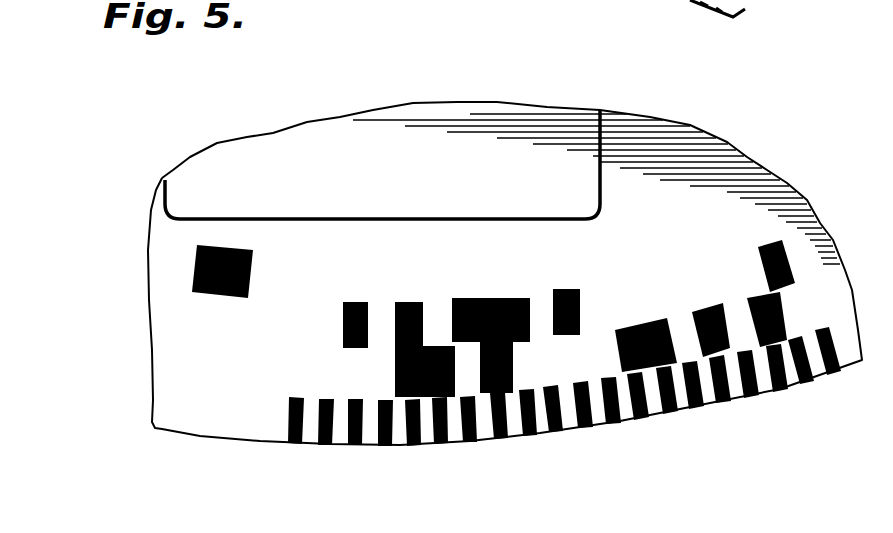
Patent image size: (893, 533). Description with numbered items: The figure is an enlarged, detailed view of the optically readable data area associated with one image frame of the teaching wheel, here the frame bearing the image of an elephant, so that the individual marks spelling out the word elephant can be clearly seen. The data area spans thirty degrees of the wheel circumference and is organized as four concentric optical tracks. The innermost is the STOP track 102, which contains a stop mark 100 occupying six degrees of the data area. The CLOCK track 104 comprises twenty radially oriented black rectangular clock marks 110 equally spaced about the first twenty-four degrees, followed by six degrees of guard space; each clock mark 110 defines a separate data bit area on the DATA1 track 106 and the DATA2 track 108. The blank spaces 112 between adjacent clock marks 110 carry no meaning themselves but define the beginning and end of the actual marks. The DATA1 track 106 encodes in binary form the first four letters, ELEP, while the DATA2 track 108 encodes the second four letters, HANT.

The stop mark 100 is at (253, 275).
The STOP track 102 is at (183, 265).
The CLOCK track 104 is at (205, 420).
The DATA1 track 106 is at (220, 376).
The DATA2 track 108 is at (200, 327).
The clock marks 110 is at (383, 447).
The blank spaces 112 is at (488, 431).